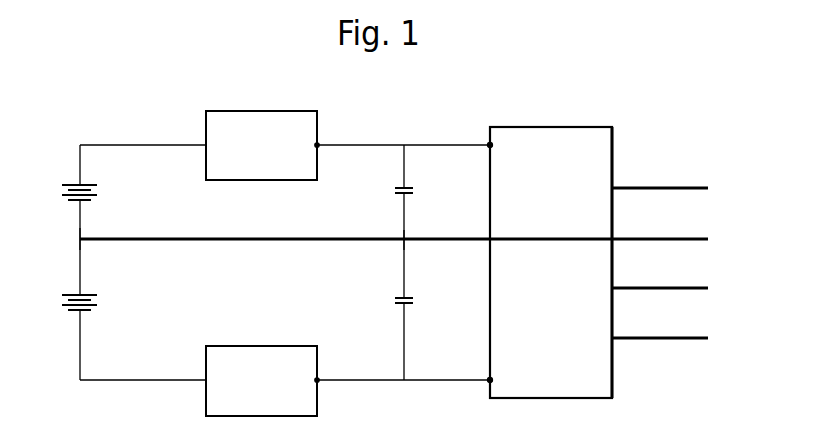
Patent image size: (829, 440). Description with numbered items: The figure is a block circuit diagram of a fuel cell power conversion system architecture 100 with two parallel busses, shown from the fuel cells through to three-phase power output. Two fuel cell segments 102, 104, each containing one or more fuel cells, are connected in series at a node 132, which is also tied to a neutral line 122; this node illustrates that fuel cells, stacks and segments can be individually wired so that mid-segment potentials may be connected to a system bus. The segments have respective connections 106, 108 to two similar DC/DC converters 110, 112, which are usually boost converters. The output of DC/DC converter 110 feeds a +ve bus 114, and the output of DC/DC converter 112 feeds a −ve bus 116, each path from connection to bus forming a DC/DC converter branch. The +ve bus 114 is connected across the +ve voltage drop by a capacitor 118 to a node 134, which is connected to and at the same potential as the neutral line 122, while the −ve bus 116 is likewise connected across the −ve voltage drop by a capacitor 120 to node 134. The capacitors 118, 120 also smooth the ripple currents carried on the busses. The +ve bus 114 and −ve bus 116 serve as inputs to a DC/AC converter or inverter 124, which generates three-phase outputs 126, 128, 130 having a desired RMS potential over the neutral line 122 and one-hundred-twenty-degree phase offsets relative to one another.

The fuel cell power conversion system architecture 100 is at (640, 100).
The fuel cell segment 102 is at (98, 190).
The fuel cell segment 104 is at (98, 300).
The connection 106 is at (146, 145).
The connection 108 is at (146, 380).
The DC/DC converter 110 is at (254, 111).
The DC/DC converter 112 is at (254, 346).
The +ve bus 114 is at (370, 145).
The -ve bus 116 is at (370, 380).
The capacitor 118 is at (414, 190).
The capacitor 120 is at (414, 300).
The neutral line 122 is at (253, 239).
The DC/AC converter 124 is at (565, 171).
The three-phase output 126 is at (711, 175).
The three-phase output 128 is at (711, 274).
The three-phase output 130 is at (711, 323).
The node 132 is at (80, 239).
The node 134 is at (404, 240).